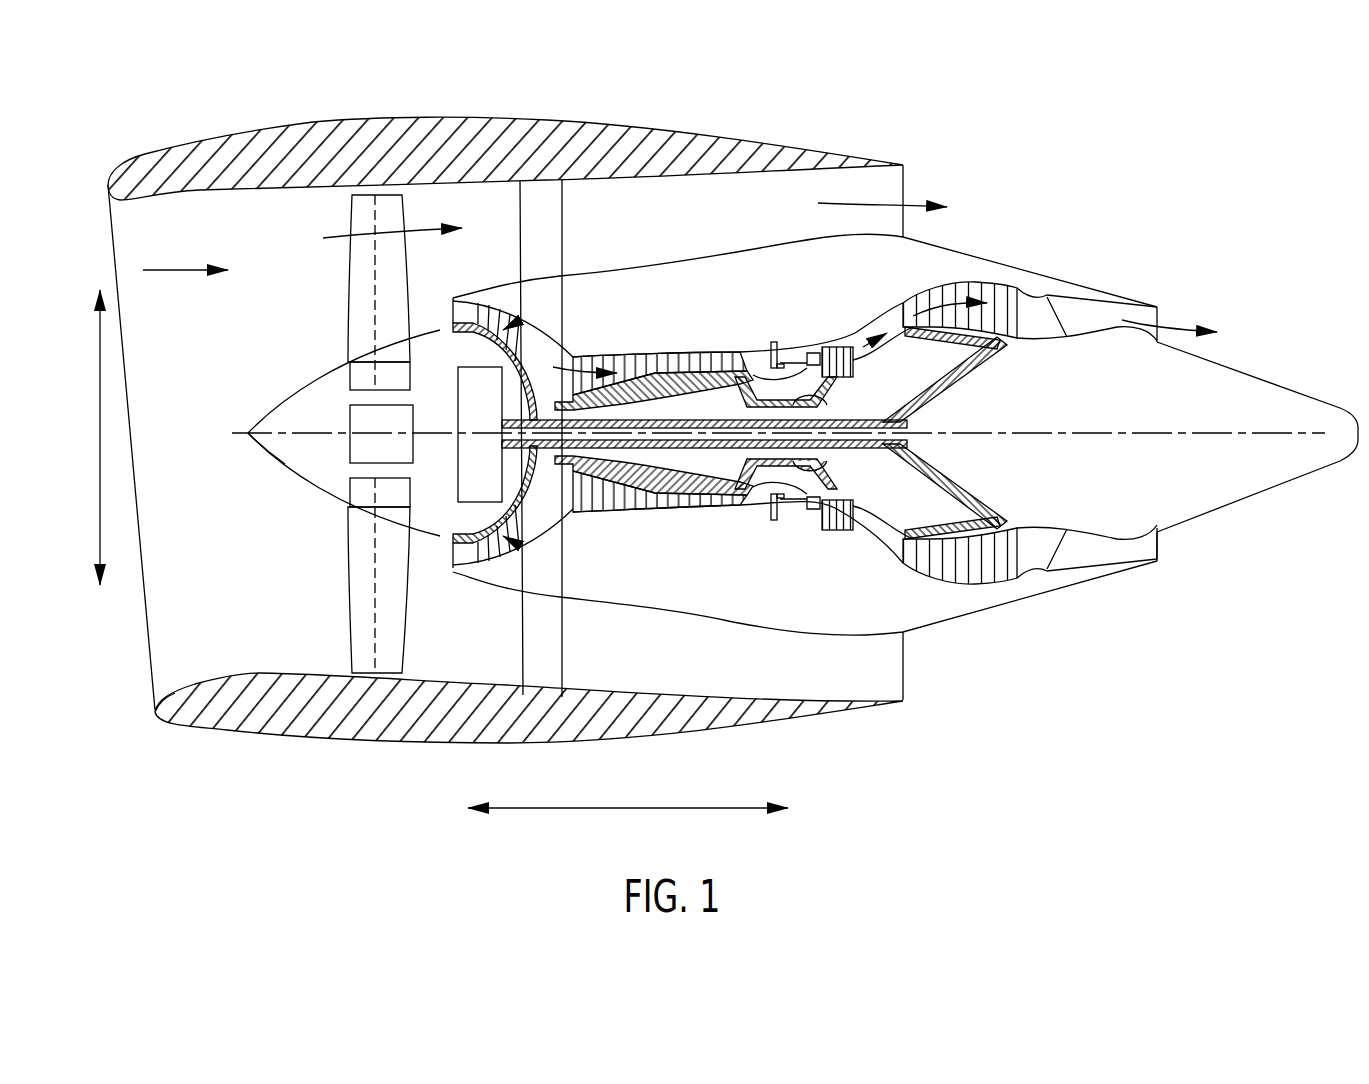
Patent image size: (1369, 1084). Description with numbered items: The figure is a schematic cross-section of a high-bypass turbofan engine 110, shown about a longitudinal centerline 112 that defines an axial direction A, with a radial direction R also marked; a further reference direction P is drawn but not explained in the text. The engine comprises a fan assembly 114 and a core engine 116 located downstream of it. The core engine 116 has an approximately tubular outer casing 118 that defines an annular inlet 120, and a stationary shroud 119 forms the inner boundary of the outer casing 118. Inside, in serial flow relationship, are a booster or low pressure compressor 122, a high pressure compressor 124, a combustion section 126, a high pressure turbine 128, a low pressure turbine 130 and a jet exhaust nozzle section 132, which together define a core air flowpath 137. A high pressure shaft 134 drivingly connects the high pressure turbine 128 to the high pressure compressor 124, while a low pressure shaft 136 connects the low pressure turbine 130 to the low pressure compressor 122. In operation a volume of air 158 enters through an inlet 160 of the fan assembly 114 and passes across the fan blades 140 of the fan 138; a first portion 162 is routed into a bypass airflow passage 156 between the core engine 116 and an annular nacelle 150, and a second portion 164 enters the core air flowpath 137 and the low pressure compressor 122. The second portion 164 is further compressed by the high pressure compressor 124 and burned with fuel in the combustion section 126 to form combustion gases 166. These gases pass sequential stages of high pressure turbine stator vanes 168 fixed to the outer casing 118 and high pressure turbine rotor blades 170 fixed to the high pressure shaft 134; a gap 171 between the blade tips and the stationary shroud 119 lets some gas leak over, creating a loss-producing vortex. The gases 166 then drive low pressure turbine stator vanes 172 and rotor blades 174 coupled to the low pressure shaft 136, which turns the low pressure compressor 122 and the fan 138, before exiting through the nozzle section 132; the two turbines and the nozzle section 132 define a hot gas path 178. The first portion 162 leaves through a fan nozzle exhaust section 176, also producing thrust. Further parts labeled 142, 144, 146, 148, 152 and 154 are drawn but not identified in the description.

The gas turbine engine 110 is at (1062, 150).
The longitudinal centerline 112 is at (1107, 433).
The fan assembly 114 is at (255, 233).
The core engine 116 is at (748, 306).
The outer casing 118 is at (745, 627).
The stationary shroud 119 is at (685, 510).
The annular inlet 120 is at (455, 558).
The low pressure compressor 122 is at (530, 472).
The high pressure compressor 124 is at (603, 514).
The combustion section 126 is at (793, 522).
The high pressure turbine 128 is at (862, 515).
The low pressure turbine 130 is at (1000, 573).
The jet exhaust nozzle section 132 is at (1067, 557).
The high pressure shaft 134 is at (797, 400).
The low pressure shaft 136 is at (883, 418).
The core air flowpath 137 is at (540, 527).
The fan 138 is at (297, 485).
The fan blades 140 is at (347, 613).
The disk 142 is at (360, 378).
The hub 144 is at (350, 417).
The power gearbox 146 is at (482, 380).
The spinner 148 is at (263, 447).
The annular nacelle 150 is at (407, 743).
The outlet guide vanes 152 is at (563, 228).
The downstream section of nacelle 154 is at (790, 150).
The bypass airflow passage 156 is at (731, 220).
The volume of air 158 is at (185, 271).
The inlet 160 is at (150, 683).
The first portion of air 162 is at (362, 233).
The second portion of air 164 is at (433, 310).
The combustion gases 166 is at (948, 303).
The HP turbine stator vanes 168 is at (812, 512).
The HP turbine rotor blades 170 is at (837, 483).
The gap 171 is at (817, 343).
The LP turbine stator vanes 172 is at (905, 568).
The LP turbine rotor blades 174 is at (928, 583).
The fan nozzle exhaust section 176 is at (890, 183).
The hot gas path 178 is at (888, 303).
The axial direction A is at (622, 805).
The radial direction R is at (98, 422).
The pitch axis P is at (395, 213).